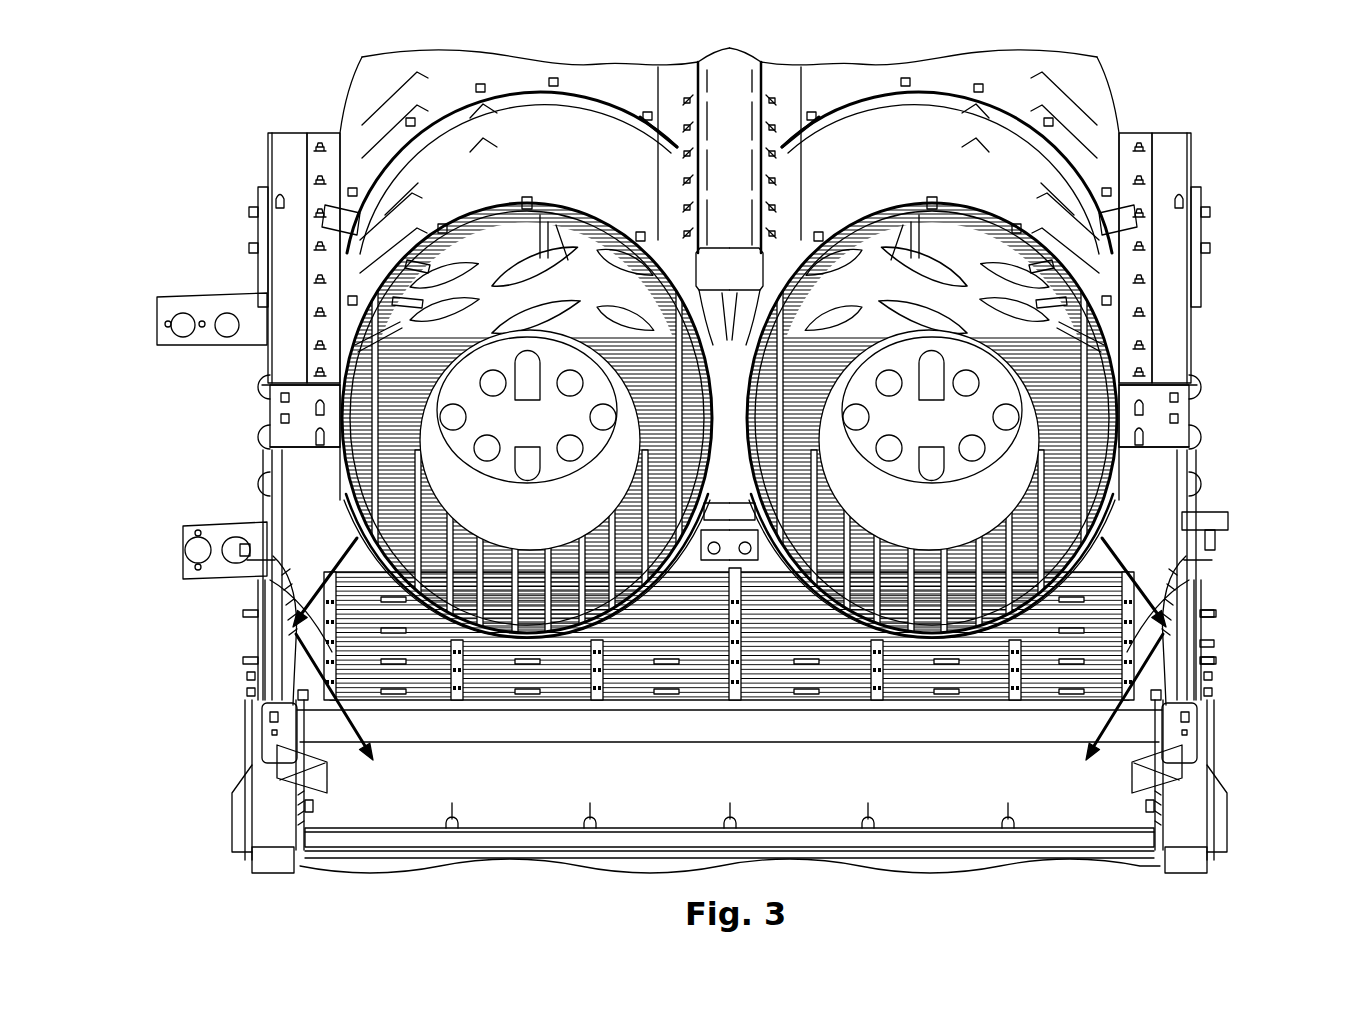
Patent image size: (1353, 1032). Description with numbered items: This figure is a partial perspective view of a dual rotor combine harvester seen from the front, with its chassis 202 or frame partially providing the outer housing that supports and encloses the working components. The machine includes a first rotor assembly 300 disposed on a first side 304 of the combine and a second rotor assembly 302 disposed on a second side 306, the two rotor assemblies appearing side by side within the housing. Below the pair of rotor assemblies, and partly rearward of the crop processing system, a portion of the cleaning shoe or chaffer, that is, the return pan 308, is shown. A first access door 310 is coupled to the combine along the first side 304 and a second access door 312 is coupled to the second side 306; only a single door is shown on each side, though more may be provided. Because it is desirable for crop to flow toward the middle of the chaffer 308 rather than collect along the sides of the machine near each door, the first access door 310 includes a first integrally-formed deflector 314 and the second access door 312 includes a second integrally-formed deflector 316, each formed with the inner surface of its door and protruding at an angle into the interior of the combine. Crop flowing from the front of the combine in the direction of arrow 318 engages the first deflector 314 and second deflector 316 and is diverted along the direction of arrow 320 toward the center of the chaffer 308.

The chassis 202 is at (290, 361).
The first rotor assembly 300 is at (522, 128).
The second rotor assembly 302 is at (1000, 128).
The first side 304 is at (155, 500).
The second side 306 is at (1250, 423).
The cleaning shoe or chaffer (return pan) 308 is at (667, 722).
The first access door 310 is at (270, 560).
The second access door 312 is at (1185, 562).
The first deflector 314 is at (287, 662).
The second deflector 316 is at (1155, 663).
The arrow 318 is at (275, 595).
The arrow 320 is at (328, 735).